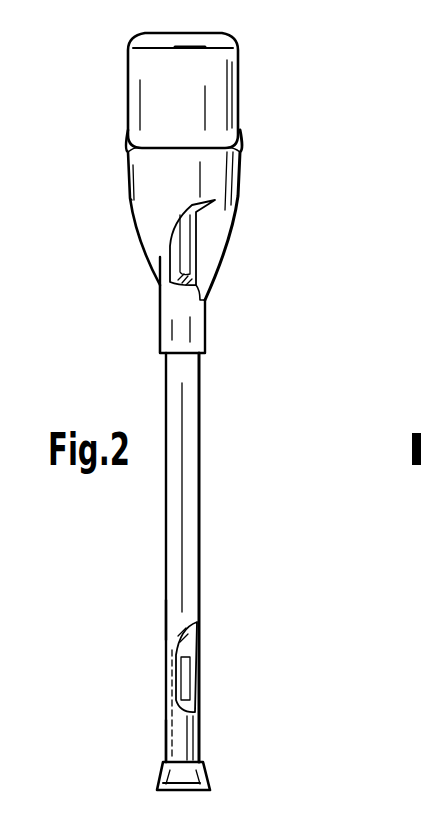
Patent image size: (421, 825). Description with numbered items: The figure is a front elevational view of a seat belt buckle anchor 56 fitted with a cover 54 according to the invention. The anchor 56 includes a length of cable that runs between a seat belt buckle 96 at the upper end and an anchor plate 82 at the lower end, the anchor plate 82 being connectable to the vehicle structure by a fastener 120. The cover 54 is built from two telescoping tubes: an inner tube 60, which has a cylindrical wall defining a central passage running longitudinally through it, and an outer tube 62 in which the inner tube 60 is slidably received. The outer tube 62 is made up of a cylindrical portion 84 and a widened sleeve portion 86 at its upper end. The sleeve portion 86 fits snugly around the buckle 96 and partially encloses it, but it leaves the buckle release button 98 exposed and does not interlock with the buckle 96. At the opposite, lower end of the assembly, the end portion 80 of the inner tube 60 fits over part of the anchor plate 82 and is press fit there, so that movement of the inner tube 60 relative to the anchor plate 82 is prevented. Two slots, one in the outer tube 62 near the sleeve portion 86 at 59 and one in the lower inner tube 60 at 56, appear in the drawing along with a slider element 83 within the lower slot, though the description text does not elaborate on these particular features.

The cover 54 is at (238, 420).
The seat belt buckle anchor 56 is at (202, 660).
The proximal slot 59 is at (205, 278).
The inner tube 60 is at (197, 512).
The outer tube 62 is at (238, 252).
The end portion 80 is at (167, 747).
The anchor plate 82 is at (200, 767).
The slider 83 is at (197, 697).
The cylindrical portion 84 is at (167, 340).
The sleeve portion 86 is at (140, 176).
The seat belt buckle 96 is at (237, 85).
The buckle release button 98 is at (155, 45).
The fastener 120 is at (173, 780).